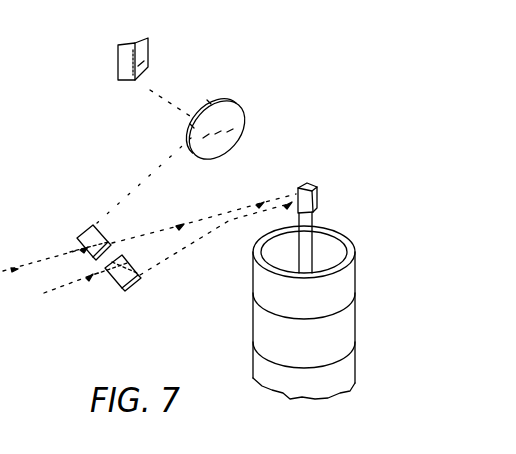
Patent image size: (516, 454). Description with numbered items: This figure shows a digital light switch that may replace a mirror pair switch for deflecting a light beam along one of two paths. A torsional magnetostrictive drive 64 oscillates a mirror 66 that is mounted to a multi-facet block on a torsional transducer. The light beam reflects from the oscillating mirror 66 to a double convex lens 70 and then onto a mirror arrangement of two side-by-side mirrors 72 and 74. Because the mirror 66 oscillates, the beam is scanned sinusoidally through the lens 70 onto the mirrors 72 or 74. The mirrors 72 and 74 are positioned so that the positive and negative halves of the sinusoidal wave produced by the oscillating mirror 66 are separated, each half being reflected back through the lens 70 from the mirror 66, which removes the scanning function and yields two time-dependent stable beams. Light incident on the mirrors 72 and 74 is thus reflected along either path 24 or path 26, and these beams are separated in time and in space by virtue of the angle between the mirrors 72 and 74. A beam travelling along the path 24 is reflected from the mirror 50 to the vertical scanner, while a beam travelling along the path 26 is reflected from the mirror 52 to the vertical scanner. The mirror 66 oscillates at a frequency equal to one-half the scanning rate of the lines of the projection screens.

The path 24 is at (32, 293).
The path 26 is at (20, 275).
The mirror 50 is at (102, 234).
The mirror 52 is at (140, 283).
The torsional magnetostrictive drive 64 is at (356, 278).
The mirror 66 is at (311, 186).
The double convex lens 70 is at (242, 114).
The mirror 72 is at (148, 53).
The mirror 74 is at (122, 78).